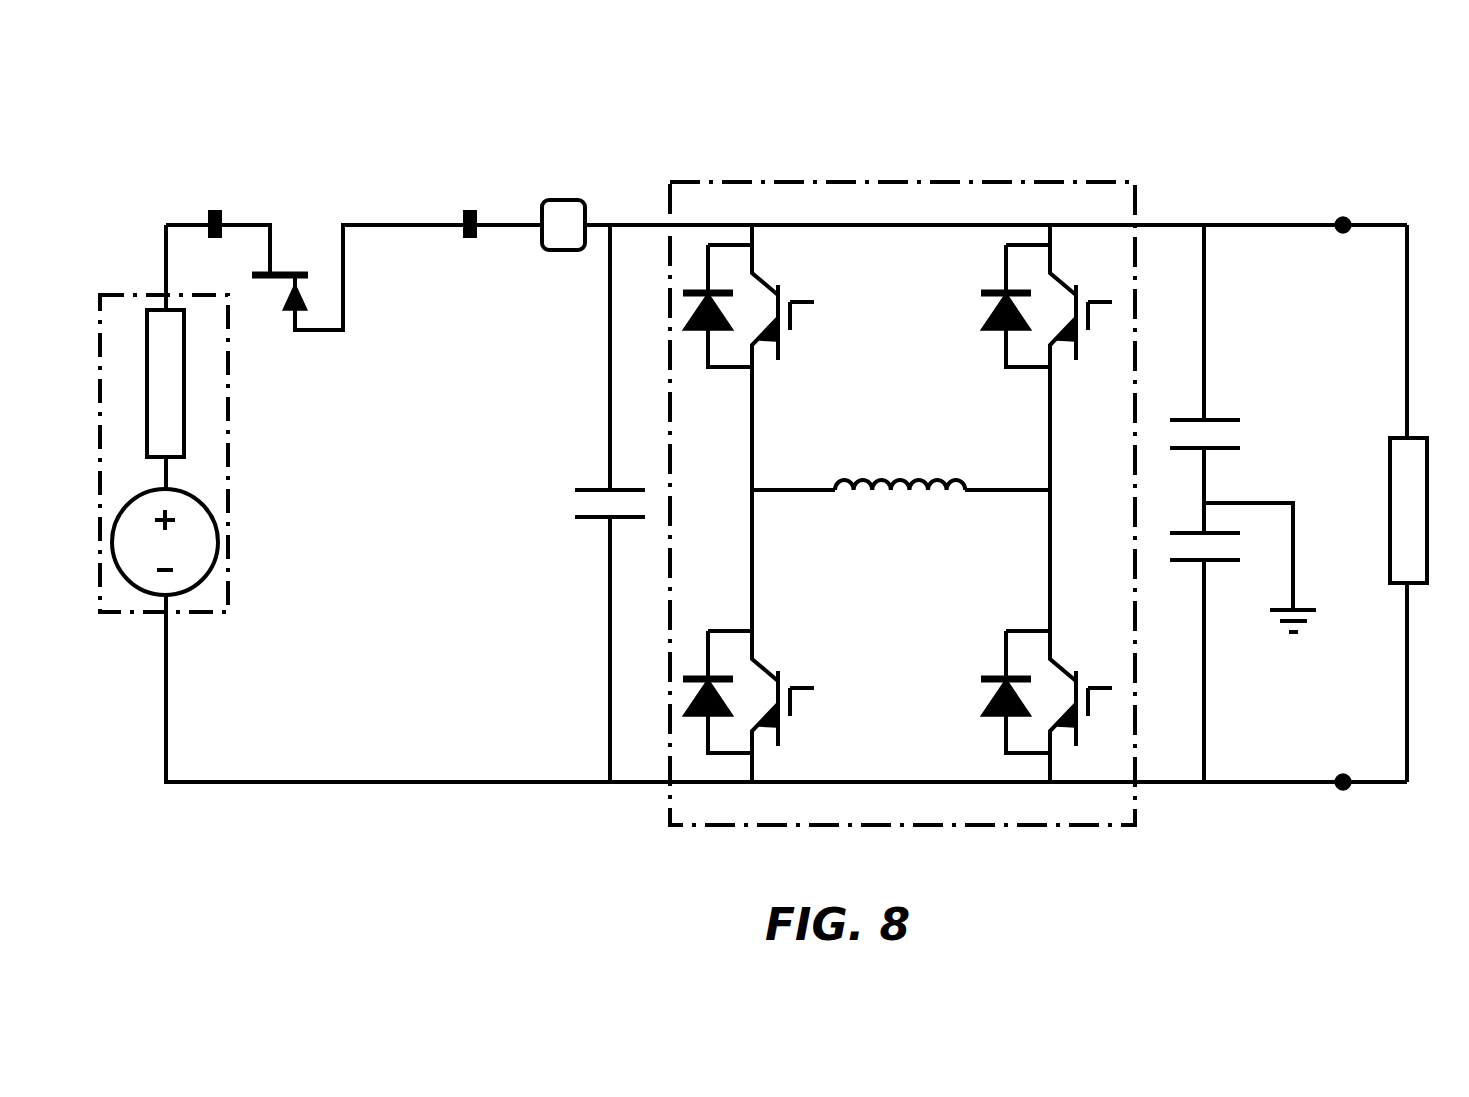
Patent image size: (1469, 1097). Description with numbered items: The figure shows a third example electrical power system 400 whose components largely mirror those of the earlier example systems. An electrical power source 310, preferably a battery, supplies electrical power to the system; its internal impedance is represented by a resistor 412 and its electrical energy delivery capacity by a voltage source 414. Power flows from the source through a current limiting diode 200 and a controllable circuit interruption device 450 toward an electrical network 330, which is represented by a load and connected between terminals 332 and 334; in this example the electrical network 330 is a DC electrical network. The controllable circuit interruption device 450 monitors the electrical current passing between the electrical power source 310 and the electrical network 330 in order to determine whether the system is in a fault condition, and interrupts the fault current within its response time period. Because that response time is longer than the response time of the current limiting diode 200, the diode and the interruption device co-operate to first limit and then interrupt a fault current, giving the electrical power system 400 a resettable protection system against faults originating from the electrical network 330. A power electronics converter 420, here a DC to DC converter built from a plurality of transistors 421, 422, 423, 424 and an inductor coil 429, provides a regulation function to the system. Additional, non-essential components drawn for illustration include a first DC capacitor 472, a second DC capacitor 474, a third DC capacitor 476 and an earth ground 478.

The electrical power system 400 is at (164, 91).
The current limiting diode 200 is at (328, 204).
The electrical power source 310 is at (185, 613).
The resistor 412 is at (183, 416).
The voltage source 414 is at (218, 522).
The controllable circuit interruption device 450 is at (563, 251).
The first DC capacitor 472 is at (588, 489).
The power electronics converter 420 is at (880, 182).
The transistor 421 is at (814, 302).
The transistor 422 is at (815, 692).
The transistor 423 is at (1003, 332).
The transistor 424 is at (1003, 700).
The inductor coil 429 is at (882, 472).
The second DC capacitor 474 is at (1220, 420).
The third DC capacitor 476 is at (1225, 562).
The earth ground 478 is at (1297, 607).
The electrical network 330 is at (1427, 545).
The terminal 332 is at (1345, 220).
The terminal 334 is at (1343, 788).